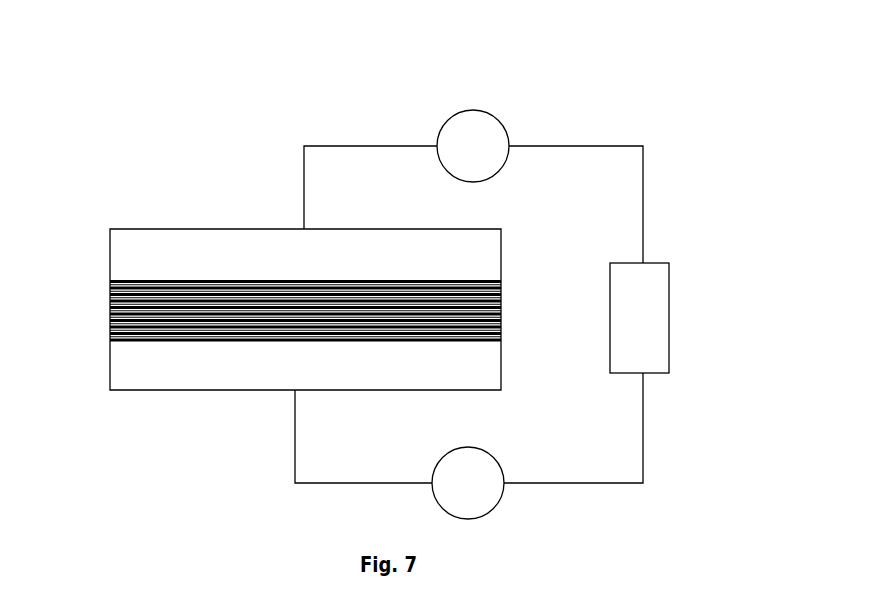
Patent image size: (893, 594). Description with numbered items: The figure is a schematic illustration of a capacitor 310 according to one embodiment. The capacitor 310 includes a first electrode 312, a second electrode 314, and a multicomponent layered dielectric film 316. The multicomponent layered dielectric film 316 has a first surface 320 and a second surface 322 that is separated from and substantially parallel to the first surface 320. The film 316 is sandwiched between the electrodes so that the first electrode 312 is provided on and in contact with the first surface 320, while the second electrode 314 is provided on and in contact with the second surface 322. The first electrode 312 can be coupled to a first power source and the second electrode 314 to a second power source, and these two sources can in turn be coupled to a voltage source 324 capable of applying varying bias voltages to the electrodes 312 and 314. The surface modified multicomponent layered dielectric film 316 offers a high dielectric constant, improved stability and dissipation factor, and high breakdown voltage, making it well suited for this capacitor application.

The capacitor 310 is at (500, 84).
The first electrode 312 is at (110, 257).
The second electrode 314 is at (110, 380).
The multicomponent layered dielectric film 316 is at (291, 313).
The first surface 320 is at (473, 280).
The second surface 322 is at (483, 341).
The voltage source 324 is at (669, 305).